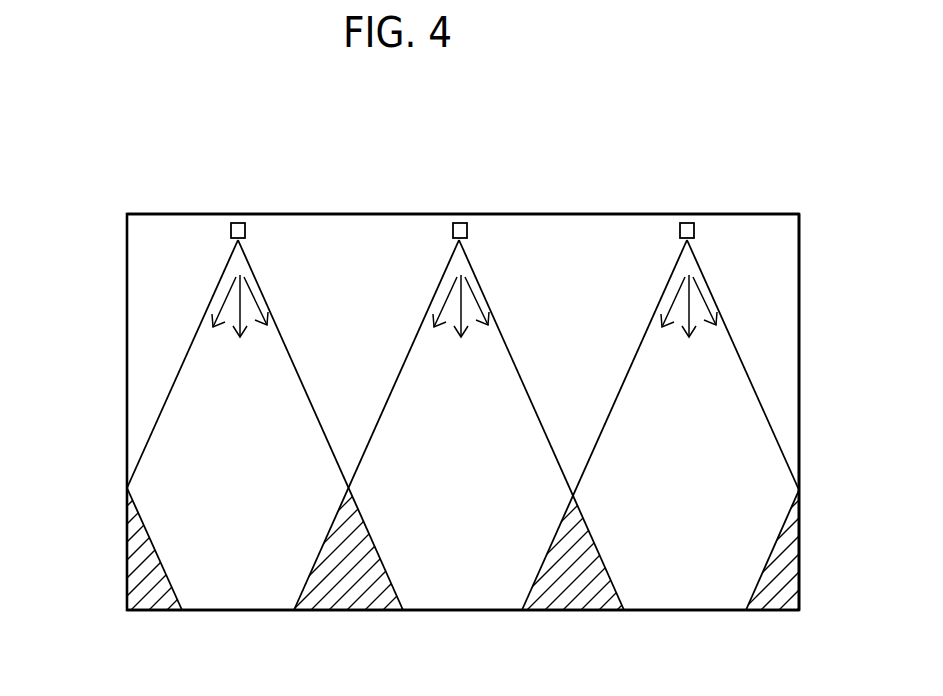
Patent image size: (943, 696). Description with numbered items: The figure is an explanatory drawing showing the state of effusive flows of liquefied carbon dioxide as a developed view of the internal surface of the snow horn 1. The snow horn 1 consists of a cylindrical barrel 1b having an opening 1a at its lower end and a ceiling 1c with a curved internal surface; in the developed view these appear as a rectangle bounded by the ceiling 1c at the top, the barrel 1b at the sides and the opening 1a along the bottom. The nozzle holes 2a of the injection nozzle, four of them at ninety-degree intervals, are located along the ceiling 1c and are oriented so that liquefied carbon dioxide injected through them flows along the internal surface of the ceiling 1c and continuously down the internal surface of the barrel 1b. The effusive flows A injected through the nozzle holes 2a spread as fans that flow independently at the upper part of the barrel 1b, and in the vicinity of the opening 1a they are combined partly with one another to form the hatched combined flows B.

The snow horn 1 is at (110, 293).
The opening 1a is at (470, 612).
The cylindrical barrel 1b is at (784, 411).
The ceiling 1c is at (785, 237).
The nozzle holes 2a is at (246, 229).
The effusive flows A is at (290, 398).
The combined flows B is at (153, 592).